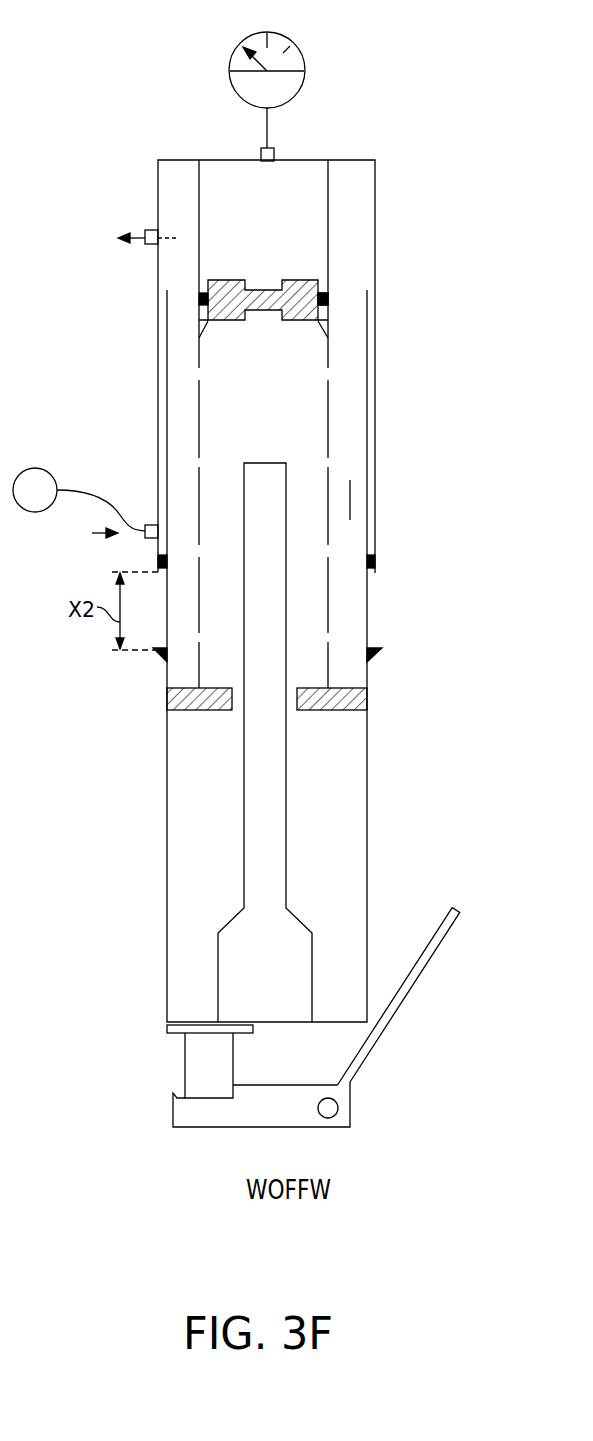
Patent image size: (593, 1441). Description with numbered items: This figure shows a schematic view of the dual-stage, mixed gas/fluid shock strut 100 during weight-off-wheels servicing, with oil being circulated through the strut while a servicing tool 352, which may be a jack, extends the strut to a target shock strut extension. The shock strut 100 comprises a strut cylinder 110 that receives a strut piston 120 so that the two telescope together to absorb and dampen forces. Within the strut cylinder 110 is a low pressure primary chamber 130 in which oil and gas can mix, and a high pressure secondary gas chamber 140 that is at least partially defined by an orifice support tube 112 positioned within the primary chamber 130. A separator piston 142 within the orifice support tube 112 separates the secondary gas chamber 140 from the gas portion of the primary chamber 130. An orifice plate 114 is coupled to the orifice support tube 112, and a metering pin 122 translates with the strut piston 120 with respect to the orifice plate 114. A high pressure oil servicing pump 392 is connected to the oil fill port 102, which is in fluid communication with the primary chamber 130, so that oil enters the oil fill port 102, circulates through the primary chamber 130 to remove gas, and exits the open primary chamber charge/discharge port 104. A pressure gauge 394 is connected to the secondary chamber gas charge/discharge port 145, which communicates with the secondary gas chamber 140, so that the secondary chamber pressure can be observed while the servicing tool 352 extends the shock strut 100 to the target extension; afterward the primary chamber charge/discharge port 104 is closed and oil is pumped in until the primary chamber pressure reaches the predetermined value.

The shock strut 100 is at (168, 100).
The oil fill port 102 is at (145, 526).
The primary chamber charge/discharge port 104 is at (145, 232).
The strut cylinder 110 is at (158, 363).
The orifice support tube 112 is at (330, 310).
The orifice plate 114 is at (370, 697).
The strut piston 120 is at (167, 878).
The metering pin 122 is at (287, 807).
The primary chamber 130 is at (349, 498).
The secondary gas chamber 140 is at (263, 266).
The separator piston 142 is at (325, 282).
The secondary chamber gas charge/discharge port 145 is at (261, 153).
The servicing tool 352 is at (160, 1027).
The high pressure oil servicing pump 392 is at (50, 452).
The pressure gauge 394 is at (305, 50).